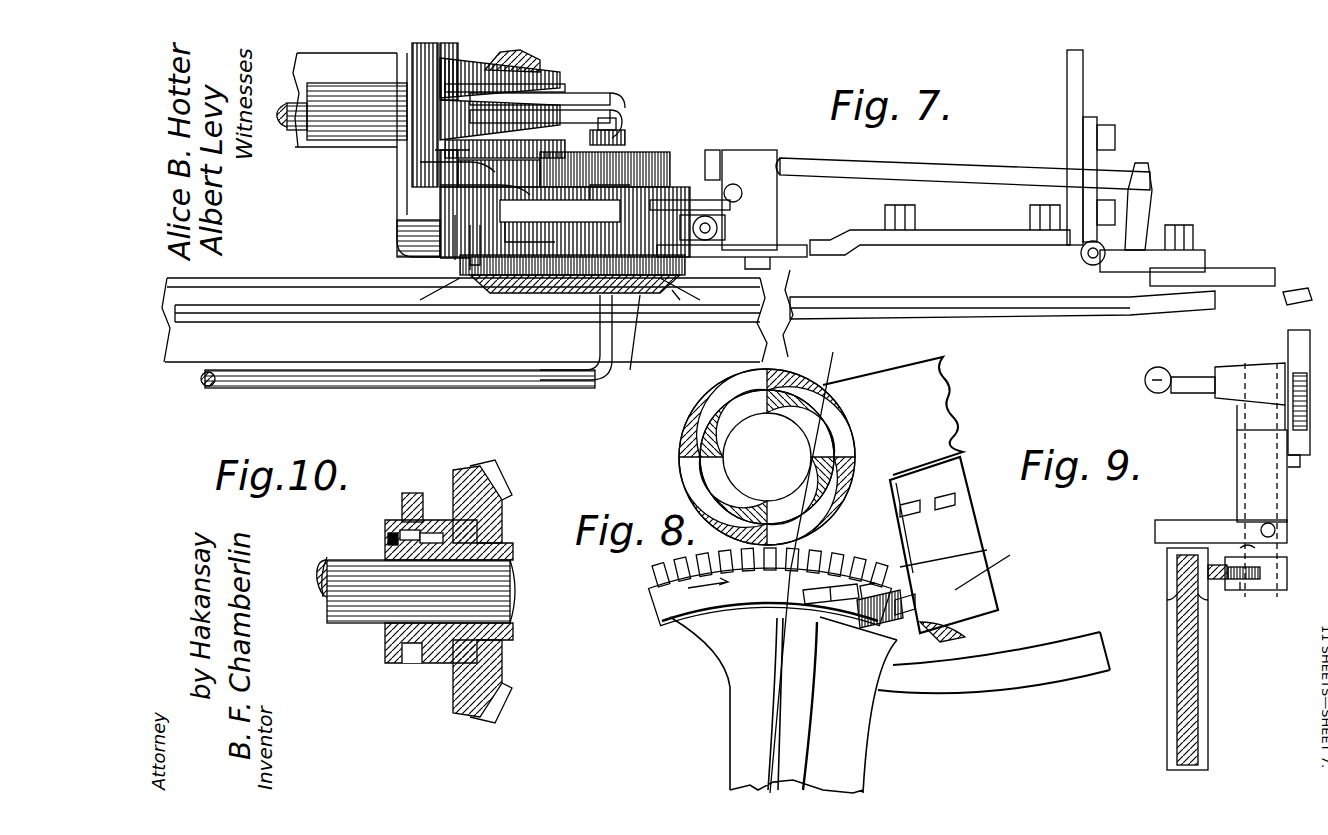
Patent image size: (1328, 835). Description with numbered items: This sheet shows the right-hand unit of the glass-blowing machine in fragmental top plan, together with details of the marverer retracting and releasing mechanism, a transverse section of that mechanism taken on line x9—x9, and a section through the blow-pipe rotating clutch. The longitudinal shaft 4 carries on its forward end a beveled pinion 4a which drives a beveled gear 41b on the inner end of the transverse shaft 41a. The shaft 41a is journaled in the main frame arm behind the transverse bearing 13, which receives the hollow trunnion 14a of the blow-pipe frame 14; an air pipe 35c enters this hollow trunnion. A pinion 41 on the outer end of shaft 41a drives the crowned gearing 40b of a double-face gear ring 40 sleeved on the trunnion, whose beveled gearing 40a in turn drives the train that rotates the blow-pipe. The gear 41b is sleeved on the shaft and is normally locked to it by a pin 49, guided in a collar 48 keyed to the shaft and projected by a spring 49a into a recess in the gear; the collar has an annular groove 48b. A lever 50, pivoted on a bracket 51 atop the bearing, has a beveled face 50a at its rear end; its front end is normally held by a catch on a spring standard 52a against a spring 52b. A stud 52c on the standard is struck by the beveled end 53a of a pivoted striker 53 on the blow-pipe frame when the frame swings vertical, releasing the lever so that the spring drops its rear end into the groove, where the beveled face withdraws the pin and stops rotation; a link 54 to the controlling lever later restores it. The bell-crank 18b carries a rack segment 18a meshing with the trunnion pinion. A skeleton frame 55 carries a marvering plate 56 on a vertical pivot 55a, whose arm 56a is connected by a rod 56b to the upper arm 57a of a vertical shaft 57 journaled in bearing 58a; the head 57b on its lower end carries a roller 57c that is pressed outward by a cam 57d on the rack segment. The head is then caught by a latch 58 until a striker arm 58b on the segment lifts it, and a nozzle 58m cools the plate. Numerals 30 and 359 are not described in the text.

In FIG. 7, the longitudinal shaft 4 is at (290, 118).
In FIG. 7, the beveled pinion 4a is at (460, 150).
In FIG. 7, the transverse bearing 13 is at (585, 240).
In FIG. 8, the transverse bearing 13 is at (690, 450).
In FIG. 7, the blow-pipe frame 14 is at (680, 345).
In FIG. 8, the hollow trunnion 14a is at (715, 469).
In FIG. 8, the rack segment 18a is at (680, 595).
In FIG. 8, the bell-crank 18b is at (730, 722).
In FIG. 9, the bell-crank 18b is at (1185, 712).
In FIG. 7, the bar 30 is at (1015, 316).
In FIG. 7, the air pipe 35c is at (515, 377).
In FIG. 7, the double-face gear ring 40 is at (600, 330).
In FIG. 7, the beveled gearing 40a is at (640, 360).
In FIG. 7, the crowned gearing 40b is at (690, 275).
In FIG. 7, the pinion 41 is at (510, 245).
In FIG. 7, the transverse shaft 41a is at (520, 92).
In FIG. 10, the transverse shaft 41a is at (358, 580).
In FIG. 7, the beveled gear 41b is at (600, 112).
In FIG. 7, the collar 48 is at (470, 172).
In FIG. 10, the collar 48 is at (385, 645).
In FIG. 10, the annular groove 48b is at (410, 660).
In FIG. 10, the pin 49 is at (440, 535).
In FIG. 10, the spring 49a is at (393, 530).
In FIG. 7, the lever 50 is at (580, 150).
In FIG. 10, the lever 50 is at (428, 530).
In FIG. 7, the beveled face 50a is at (455, 190).
In FIG. 7, the bracket 51 is at (640, 170).
In FIG. 7, the spring standard 52a is at (610, 180).
In FIG. 7, the spring 52b is at (545, 240).
In FIG. 7, the stud 52c is at (660, 215).
In FIG. 7, the pivoted striker 53 is at (440, 268).
In FIG. 7, the beveled end 53a is at (475, 230).
In FIG. 7, the link 54 is at (735, 190).
In FIG. 7, the skeleton frame 55 is at (950, 242).
In FIG. 8, the skeleton frame 55 is at (945, 435).
In FIG. 9, the skeleton frame 55 is at (1290, 362).
In FIG. 7, the vertical pivot 55a is at (1083, 258).
In FIG. 7, the marvering plate 56 is at (1215, 275).
In FIG. 7, the arm 56a is at (1140, 235).
In FIG. 7, the rod 56b is at (920, 178).
In FIG. 9, the rod 56b is at (1145, 380).
In FIG. 7, the vertical shaft 57 is at (718, 230).
In FIG. 9, the vertical shaft 57 is at (1265, 420).
In FIG. 7, the upper arm 57a is at (742, 196).
In FIG. 9, the upper arm 57a is at (1240, 380).
In FIG. 8, the head 57b is at (985, 575).
In FIG. 9, the head 57b is at (1272, 588).
In FIG. 8, the roller 57c is at (880, 625).
In FIG. 9, the roller 57c is at (1240, 592).
In FIG. 8, the cam 57d is at (800, 603).
In FIG. 9, the cam 57d is at (1208, 575).
In FIG. 8, the latch 58 is at (900, 555).
In FIG. 9, the latch 58 is at (1172, 530).
In FIG. 8, the bearing 58a is at (965, 525).
In FIG. 9, the bearing 58a is at (1268, 460).
In FIG. 8, the striker arm 58b is at (1025, 680).
In FIG. 7, the nozzle 58m is at (1285, 285).
In FIG. 7, the cam 359 is at (540, 66).
In FIG. 8, the section line x9 is at (798, 576).